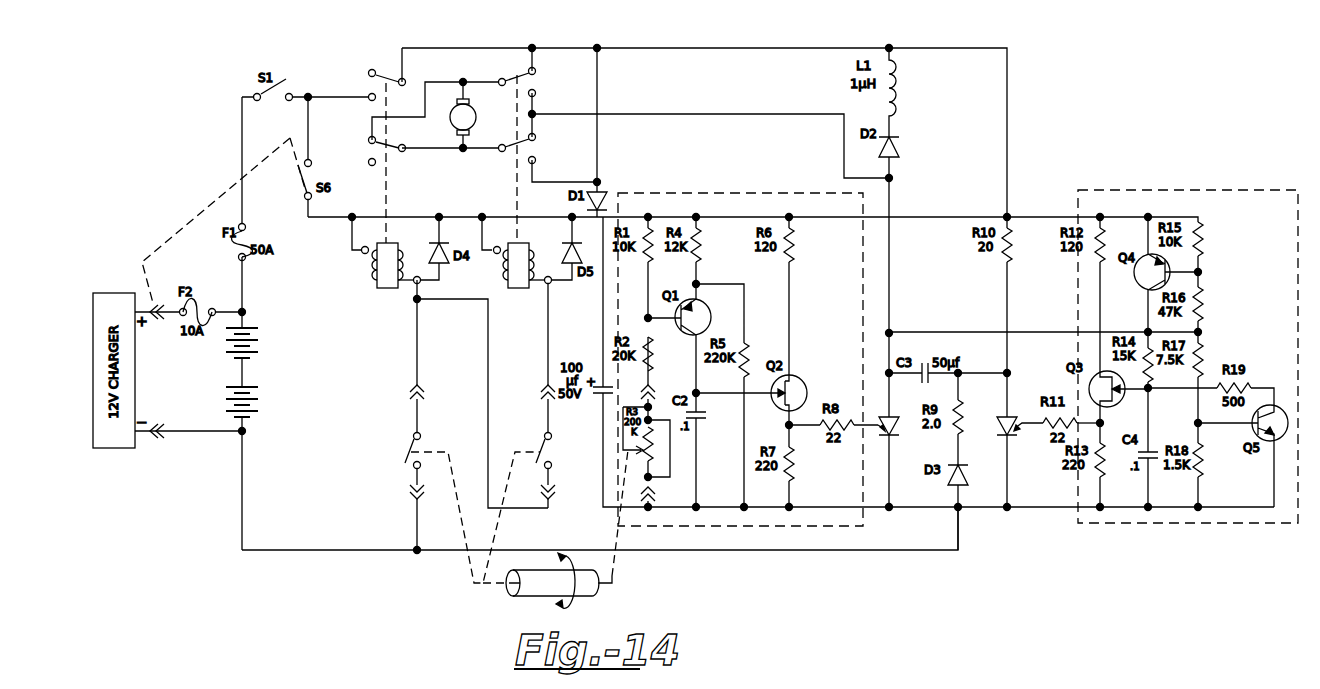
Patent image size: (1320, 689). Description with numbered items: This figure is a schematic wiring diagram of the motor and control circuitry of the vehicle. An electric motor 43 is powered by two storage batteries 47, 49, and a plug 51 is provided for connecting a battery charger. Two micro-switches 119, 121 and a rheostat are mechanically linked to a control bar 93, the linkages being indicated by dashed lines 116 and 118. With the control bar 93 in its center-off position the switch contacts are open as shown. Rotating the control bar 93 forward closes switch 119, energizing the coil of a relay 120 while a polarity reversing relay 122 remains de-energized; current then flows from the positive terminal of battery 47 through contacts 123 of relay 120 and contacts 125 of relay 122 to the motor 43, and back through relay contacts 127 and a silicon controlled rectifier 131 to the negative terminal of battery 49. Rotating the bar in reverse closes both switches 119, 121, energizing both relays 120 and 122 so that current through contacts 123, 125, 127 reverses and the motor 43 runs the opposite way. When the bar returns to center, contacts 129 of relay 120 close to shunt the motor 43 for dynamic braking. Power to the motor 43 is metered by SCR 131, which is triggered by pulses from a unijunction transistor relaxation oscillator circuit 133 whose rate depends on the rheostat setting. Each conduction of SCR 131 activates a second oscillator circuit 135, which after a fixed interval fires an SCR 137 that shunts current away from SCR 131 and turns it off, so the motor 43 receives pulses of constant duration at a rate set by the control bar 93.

The electric motor 43 is at (474, 133).
The storage battery 47 is at (258, 340).
The storage battery 49 is at (258, 400).
The plug 51 is at (156, 322).
The control bar 93 is at (580, 597).
The mechanical linkage 116 is at (495, 519).
The mechanical linkage 118 is at (612, 562).
The micro-switch 119 is at (406, 457).
The relay 120 is at (400, 42).
The micro-switch 121 is at (542, 445).
The polarity reversing relay 122 is at (540, 42).
The relay contacts 123 is at (365, 86).
The relay contacts 125 is at (543, 83).
The relay contacts 127 is at (543, 151).
The relay contacts 129 is at (364, 153).
The silicon controlled rectifier 131 is at (892, 417).
The unijunction transistor relaxation oscillator circuit 133 is at (832, 527).
The second unijunction transistor oscillator circuit 135 is at (1181, 524).
The silicon controlled rectifier 137 is at (999, 419).